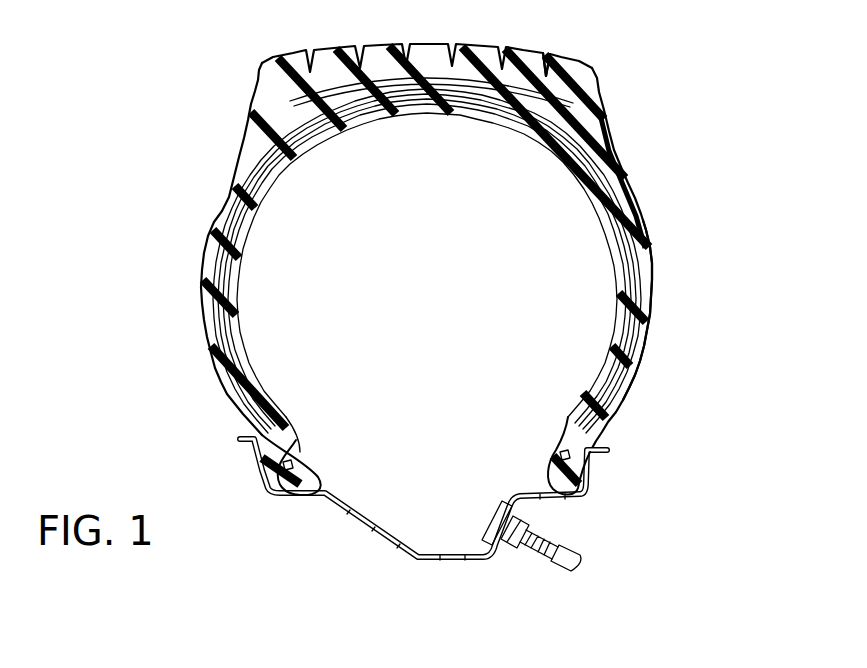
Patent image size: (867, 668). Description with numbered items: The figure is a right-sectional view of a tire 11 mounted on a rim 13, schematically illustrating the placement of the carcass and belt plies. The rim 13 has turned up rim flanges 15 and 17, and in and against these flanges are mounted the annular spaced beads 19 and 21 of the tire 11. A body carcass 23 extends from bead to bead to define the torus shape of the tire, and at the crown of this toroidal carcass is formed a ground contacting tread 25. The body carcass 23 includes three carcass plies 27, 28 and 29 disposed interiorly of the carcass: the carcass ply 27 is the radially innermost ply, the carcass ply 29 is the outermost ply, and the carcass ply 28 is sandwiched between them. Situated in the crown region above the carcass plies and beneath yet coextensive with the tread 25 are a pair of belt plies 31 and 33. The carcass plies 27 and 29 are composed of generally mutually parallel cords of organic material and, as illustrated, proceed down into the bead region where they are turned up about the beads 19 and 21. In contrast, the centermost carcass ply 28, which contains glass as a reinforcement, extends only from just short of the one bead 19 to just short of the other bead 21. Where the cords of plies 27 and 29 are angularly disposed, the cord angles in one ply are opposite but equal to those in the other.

The tire 11 is at (197, 271).
The rim 13 is at (556, 502).
The rim flange 15 is at (262, 463).
The rim flange 17 is at (564, 490).
The bead 19 is at (318, 488).
The bead 21 is at (577, 474).
The body carcass 23 is at (654, 305).
The tread 25 is at (596, 70).
The carcass ply 27 is at (230, 290).
The carcass ply 28 is at (225, 317).
The carcass ply 29 is at (222, 344).
The belt ply 31 is at (578, 103).
The belt ply 33 is at (539, 67).